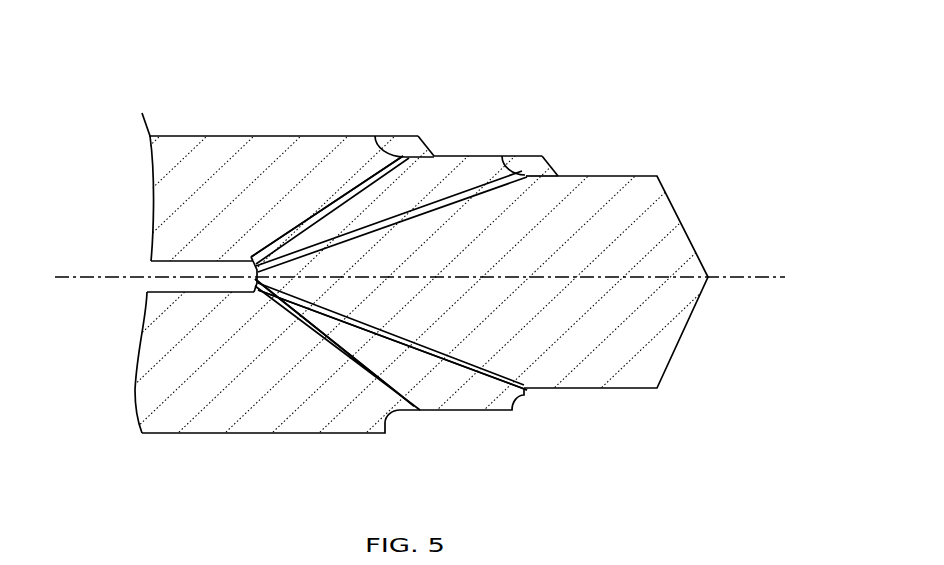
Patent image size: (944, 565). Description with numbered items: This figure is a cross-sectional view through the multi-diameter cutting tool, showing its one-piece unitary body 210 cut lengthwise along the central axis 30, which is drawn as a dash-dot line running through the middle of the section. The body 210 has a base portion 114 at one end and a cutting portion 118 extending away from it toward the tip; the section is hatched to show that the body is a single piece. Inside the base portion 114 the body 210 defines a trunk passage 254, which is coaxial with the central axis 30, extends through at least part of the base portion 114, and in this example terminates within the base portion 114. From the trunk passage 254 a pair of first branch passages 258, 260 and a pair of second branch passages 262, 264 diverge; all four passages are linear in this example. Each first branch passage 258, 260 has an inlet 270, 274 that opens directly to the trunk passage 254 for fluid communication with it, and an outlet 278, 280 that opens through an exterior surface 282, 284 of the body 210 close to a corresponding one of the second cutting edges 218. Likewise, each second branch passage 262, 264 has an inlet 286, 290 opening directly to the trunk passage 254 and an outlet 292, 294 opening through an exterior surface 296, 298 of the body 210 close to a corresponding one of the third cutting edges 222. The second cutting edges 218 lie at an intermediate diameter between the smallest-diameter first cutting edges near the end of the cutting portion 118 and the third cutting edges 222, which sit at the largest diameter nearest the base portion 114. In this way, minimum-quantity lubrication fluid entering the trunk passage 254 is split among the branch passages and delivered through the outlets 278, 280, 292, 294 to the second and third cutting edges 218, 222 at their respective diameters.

The central axis 30 is at (77, 272).
The base portion 114 is at (181, 425).
The cutting portion 118 is at (642, 337).
The unitary body 210 is at (243, 433).
The second cutting edges 218 is at (548, 158).
The third cutting edges 222 is at (421, 137).
The trunk passage 254 is at (253, 265).
The first branch passage 258 is at (483, 177).
The first branch passage 260 is at (472, 373).
The second branch passage 262 is at (305, 218).
The second branch passage 264 is at (345, 353).
The inlet 270 is at (167, 260).
The inlet 274 is at (200, 292).
The outlet 278 is at (524, 175).
The outlet 280 is at (522, 391).
The exterior surface 282 is at (535, 170).
The exterior surface 284 is at (520, 397).
The inlet 286 is at (250, 260).
The inlet 290 is at (255, 293).
The outlet 292 is at (408, 156).
The outlet 294 is at (418, 411).
The exterior surface 296 is at (400, 153).
The exterior surface 298 is at (398, 417).